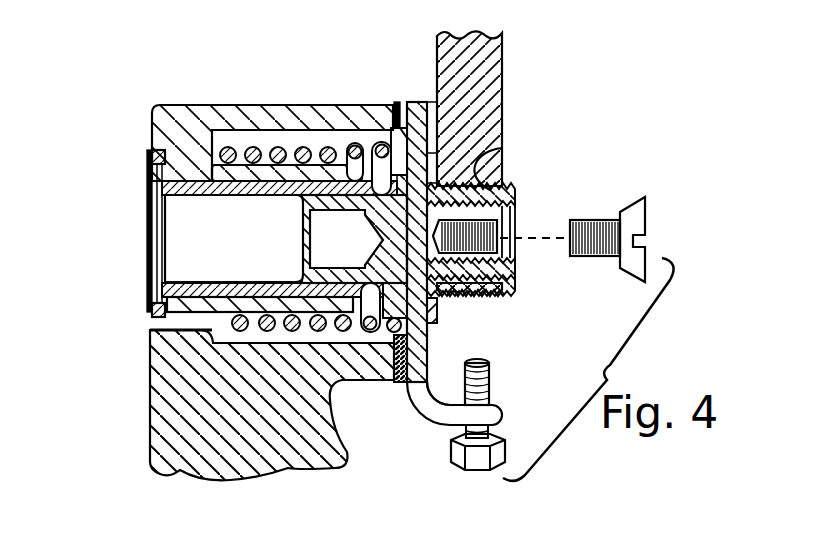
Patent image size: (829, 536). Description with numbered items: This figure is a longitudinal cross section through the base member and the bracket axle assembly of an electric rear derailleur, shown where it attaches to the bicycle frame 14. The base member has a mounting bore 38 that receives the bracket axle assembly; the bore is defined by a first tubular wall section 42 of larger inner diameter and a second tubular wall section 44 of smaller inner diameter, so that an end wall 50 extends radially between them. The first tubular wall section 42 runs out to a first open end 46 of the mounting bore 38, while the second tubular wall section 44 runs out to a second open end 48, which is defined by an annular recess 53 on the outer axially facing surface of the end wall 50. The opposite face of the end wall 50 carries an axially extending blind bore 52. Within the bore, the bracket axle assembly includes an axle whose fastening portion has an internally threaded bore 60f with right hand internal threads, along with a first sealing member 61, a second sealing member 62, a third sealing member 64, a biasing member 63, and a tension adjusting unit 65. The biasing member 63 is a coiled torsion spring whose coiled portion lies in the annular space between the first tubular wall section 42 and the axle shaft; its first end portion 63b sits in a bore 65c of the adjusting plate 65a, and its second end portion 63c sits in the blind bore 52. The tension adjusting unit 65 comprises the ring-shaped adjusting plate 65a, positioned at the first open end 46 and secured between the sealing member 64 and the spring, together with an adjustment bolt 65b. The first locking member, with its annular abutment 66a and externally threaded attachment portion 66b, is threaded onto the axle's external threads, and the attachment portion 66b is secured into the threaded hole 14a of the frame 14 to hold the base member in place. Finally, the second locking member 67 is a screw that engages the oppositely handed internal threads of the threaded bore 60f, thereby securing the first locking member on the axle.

The frame 14 is at (505, 83).
The threaded hole 14a is at (513, 193).
The mounting bore 38 is at (265, 140).
The first tubular wall section 42 is at (218, 115).
The second tubular wall section 44 is at (295, 168).
The first open end 46 is at (397, 101).
The second open end 48 is at (150, 154).
The end wall 50 is at (222, 118).
The blind bore 52 is at (185, 328).
The annular recess 53 is at (147, 312).
The internally threaded bore 60f is at (480, 245).
The first sealing member 61 is at (147, 165).
The second sealing member 62 is at (323, 178).
The biasing member 63 is at (320, 346).
The first end portion 63b is at (425, 337).
The second end portion 63c is at (163, 332).
The third sealing member 64 is at (400, 382).
The tension adjusting unit 65 is at (434, 432).
The adjusting plate 65a is at (421, 405).
The adjustment bolt 65b is at (491, 380).
The bore 65c is at (430, 331).
The abutment 66a is at (431, 152).
The attachment portion 66b is at (477, 153).
The second locking member 67 is at (647, 210).